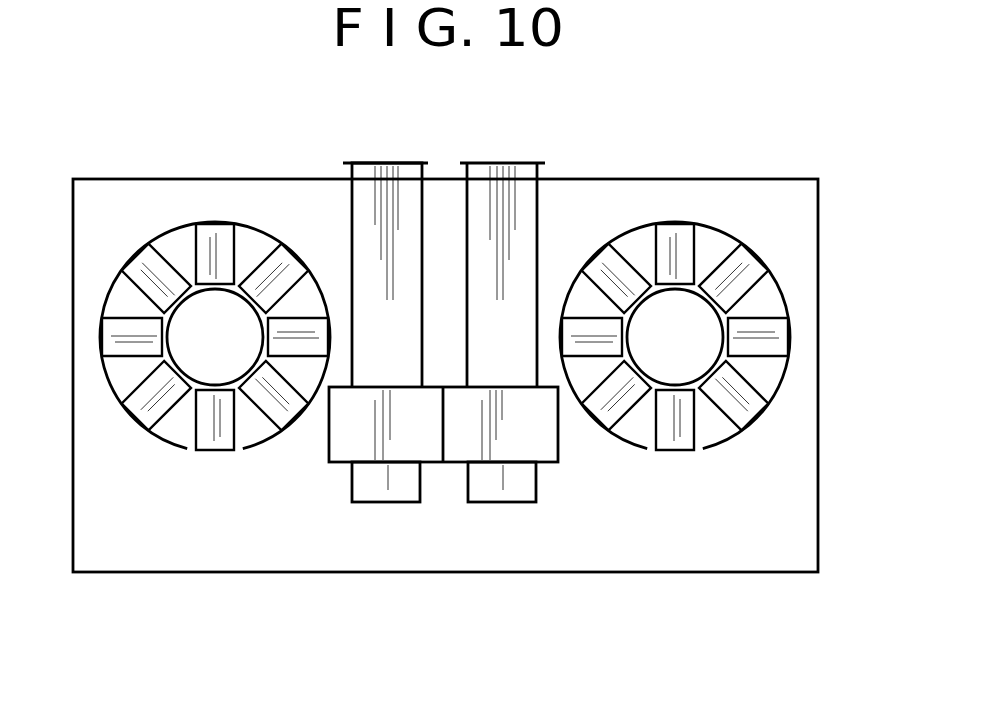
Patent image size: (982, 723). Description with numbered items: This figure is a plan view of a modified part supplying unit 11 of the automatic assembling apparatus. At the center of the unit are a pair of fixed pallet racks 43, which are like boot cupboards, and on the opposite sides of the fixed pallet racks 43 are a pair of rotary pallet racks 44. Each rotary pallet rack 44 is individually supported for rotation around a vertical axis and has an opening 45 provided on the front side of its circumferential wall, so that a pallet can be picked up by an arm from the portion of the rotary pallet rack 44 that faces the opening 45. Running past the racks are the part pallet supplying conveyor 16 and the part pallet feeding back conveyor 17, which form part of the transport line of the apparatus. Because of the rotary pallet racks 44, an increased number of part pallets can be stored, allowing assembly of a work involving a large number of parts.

The part supplying unit 11 is at (690, 176).
The part pallet supplying conveyor 16 is at (527, 173).
The part pallet feeding back conveyor 17 is at (366, 174).
The fixed pallet rack 43 is at (463, 445).
The rotary pallet rack 44 is at (257, 433).
The opening 45 is at (190, 455).